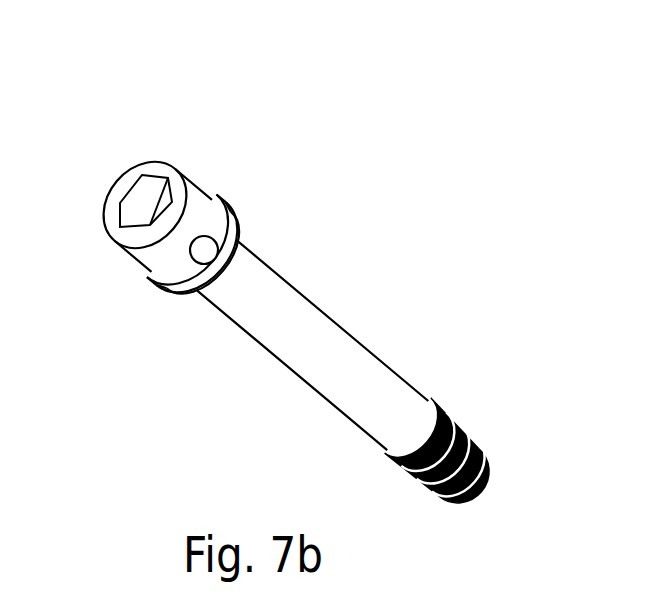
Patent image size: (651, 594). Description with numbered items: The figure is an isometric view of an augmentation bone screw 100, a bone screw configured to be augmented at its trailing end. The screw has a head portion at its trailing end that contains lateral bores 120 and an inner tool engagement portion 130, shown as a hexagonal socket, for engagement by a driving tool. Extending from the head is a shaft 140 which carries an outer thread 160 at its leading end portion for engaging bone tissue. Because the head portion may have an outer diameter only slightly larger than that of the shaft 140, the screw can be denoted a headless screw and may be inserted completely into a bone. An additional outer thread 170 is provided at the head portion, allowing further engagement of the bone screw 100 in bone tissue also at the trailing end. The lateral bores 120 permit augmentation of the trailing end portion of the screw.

The bone screw 100 is at (305, 256).
The lateral bores 120 is at (189, 220).
The inner tool engagement portion 130 is at (138, 195).
The shaft 140 is at (348, 385).
The outer thread 160 is at (464, 420).
The additional outer thread 170 is at (223, 210).